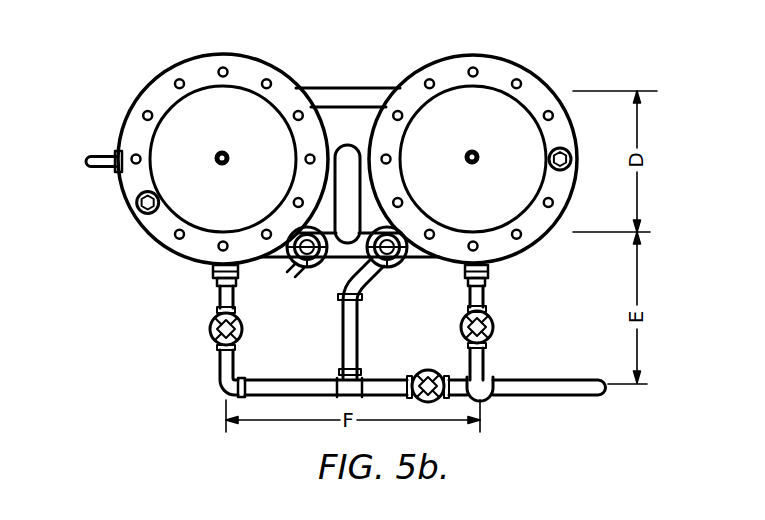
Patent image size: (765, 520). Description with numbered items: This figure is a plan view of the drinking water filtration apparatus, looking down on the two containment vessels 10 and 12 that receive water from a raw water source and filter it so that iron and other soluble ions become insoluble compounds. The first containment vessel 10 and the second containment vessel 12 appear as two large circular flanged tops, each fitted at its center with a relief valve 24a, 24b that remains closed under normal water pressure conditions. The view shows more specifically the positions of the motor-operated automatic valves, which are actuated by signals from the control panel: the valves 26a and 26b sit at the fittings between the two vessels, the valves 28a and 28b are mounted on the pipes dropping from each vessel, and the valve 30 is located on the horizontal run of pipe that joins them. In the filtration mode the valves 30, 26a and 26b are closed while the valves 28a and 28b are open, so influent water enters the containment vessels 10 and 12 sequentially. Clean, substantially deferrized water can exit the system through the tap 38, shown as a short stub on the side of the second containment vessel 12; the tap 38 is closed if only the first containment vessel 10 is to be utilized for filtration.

The first containment vessel 10 is at (483, 108).
The second containment vessel 12 is at (200, 117).
The relief valve 24a is at (228, 153).
The relief valve 24b is at (478, 152).
The automatic valve 26a is at (298, 268).
The automatic valve 26b is at (399, 266).
The automatic valve 28a is at (212, 322).
The automatic valve 28b is at (490, 318).
The automatic valve 30 is at (421, 370).
The tap 38 is at (118, 150).